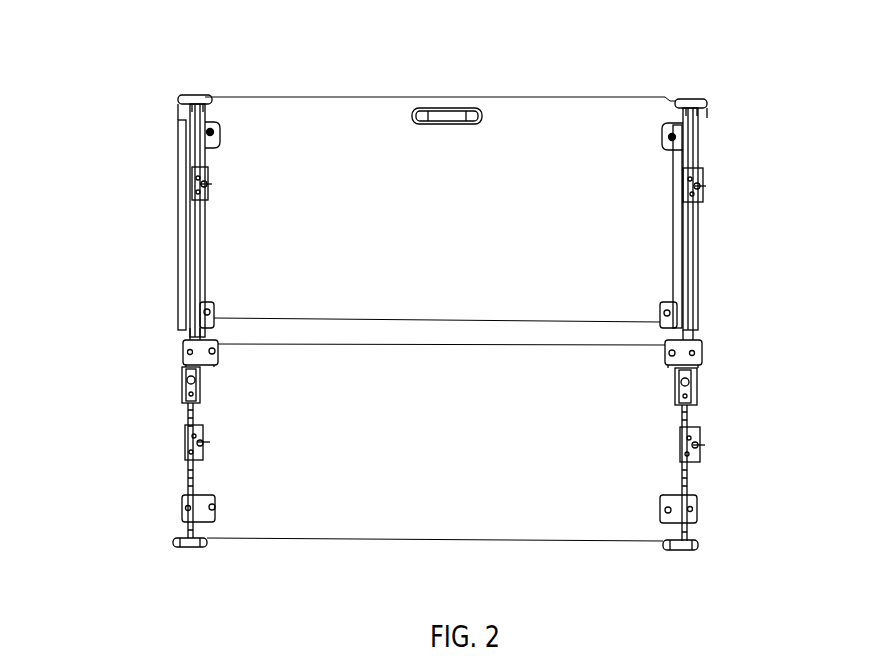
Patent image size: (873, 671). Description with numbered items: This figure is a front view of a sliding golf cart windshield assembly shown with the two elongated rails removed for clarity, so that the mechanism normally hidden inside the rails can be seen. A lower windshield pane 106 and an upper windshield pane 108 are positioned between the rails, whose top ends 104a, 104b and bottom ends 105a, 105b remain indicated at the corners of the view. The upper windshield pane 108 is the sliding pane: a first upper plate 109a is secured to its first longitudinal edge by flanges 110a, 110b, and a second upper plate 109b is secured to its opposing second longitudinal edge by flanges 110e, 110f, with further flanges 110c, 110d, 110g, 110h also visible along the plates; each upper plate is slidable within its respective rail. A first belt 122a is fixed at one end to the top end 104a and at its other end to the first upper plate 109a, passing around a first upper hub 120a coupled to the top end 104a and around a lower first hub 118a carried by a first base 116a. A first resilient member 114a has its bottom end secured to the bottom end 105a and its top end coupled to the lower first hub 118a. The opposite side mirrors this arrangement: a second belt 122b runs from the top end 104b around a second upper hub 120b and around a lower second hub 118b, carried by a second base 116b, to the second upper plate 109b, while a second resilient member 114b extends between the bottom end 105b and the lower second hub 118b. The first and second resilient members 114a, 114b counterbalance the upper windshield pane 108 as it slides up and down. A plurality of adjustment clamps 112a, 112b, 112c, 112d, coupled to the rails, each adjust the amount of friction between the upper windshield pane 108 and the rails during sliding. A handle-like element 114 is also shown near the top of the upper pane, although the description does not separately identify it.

The top end 104a is at (196, 95).
The top end 104b is at (700, 99).
The bottom end 105a is at (190, 547).
The bottom end 105b is at (688, 550).
The lower windshield pane 106 is at (612, 528).
The upper windshield pane 108 is at (590, 105).
The first upper plate 109a is at (178, 240).
The second upper plate 109b is at (700, 250).
The flange 110a is at (220, 130).
The flange 110b is at (212, 306).
The connector bracket 110c is at (218, 358).
The connector bracket 110d is at (215, 503).
The flange 110e is at (662, 140).
The flange 110f is at (665, 304).
The connector bracket 110g is at (665, 356).
The connector bracket 110h is at (665, 500).
The adjustment clamp 112a is at (212, 182).
The adjustment clamp 112b is at (203, 440).
The adjustment clamp 112c is at (705, 180).
The adjustment clamp 112d is at (700, 442).
The handle 114 is at (450, 108).
The first resilient member 114a is at (188, 470).
The second resilient member 114b is at (697, 475).
The first base 116a is at (182, 386).
The second base 116b is at (697, 392).
The lower first hub 118a is at (183, 352).
The lower second hub 118b is at (702, 350).
The first upper hub 120a is at (178, 104).
The second upper hub 120b is at (707, 112).
The first belt 122a is at (184, 335).
The second belt 122b is at (700, 336).